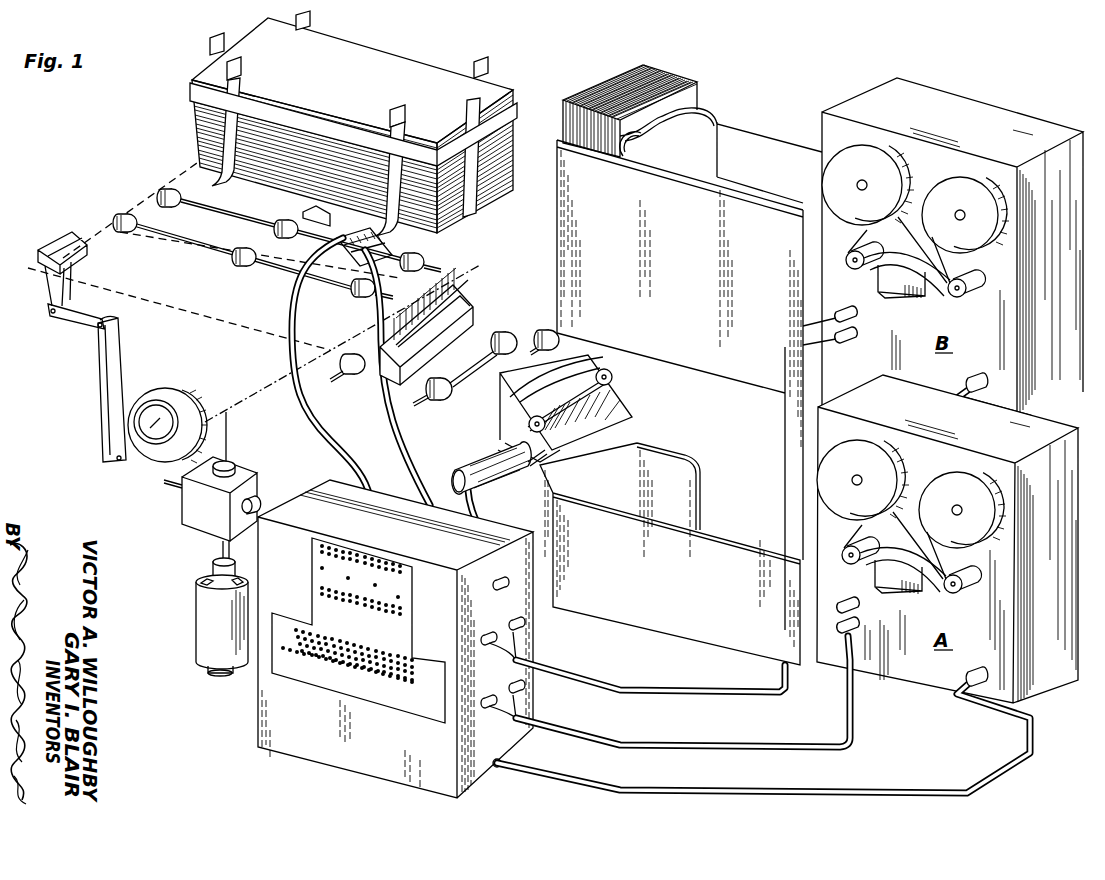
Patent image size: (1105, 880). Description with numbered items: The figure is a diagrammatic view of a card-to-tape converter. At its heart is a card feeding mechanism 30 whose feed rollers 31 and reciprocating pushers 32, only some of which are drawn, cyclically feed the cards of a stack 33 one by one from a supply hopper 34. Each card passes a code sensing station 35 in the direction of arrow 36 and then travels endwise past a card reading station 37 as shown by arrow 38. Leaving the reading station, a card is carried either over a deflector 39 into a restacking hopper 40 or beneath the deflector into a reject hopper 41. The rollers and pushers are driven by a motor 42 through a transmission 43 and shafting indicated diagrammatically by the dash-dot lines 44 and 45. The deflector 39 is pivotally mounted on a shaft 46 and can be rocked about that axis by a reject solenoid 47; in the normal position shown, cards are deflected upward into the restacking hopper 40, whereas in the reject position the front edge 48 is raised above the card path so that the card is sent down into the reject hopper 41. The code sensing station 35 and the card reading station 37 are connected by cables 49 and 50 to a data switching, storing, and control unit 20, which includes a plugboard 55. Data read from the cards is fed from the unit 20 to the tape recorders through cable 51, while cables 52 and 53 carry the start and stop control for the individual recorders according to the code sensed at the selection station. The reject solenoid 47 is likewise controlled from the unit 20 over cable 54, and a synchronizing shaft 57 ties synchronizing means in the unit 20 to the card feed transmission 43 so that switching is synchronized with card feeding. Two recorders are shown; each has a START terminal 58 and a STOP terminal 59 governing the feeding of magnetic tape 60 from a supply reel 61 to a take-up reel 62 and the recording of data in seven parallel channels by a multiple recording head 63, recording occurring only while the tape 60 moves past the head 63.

The data switching, storing, and control unit 20 is at (375, 639).
The card feeding mechanism 30 is at (280, 227).
The feed rollers 31 is at (164, 186).
The reciprocating pushers 32 is at (40, 250).
The stack 33 is at (504, 167).
The supply hopper 34 is at (190, 92).
The code sensing station 35 is at (401, 277).
The arrow 36 is at (266, 238).
The card reading station 37 is at (479, 318).
The arrow 38 is at (245, 306).
The deflector 39 is at (500, 378).
The restacking hopper 40 is at (669, 232).
The reject hopper 41 is at (724, 615).
The motor 42 is at (225, 651).
The transmission 43 is at (213, 524).
The shafting 44 is at (285, 384).
The shafting 45 is at (103, 462).
The shaft 46 is at (573, 401).
The reject solenoid 47 is at (500, 483).
The front edge 48 is at (487, 392).
The cable 49 is at (291, 430).
The cable 50 is at (378, 433).
The cable 51 is at (739, 786).
The cable 52 is at (690, 688).
The cable 53 is at (716, 740).
The cable 54 is at (494, 522).
The plugboard 55 is at (266, 666).
The synchronizing shaft 57 is at (258, 500).
The START terminal 58 is at (853, 290).
The STOP terminal 59 is at (857, 325).
The magnetic tape 60 is at (963, 272).
The supply reel 61 is at (868, 173).
The take-up reel 62 is at (971, 203).
The multiple recording head 63 is at (896, 285).